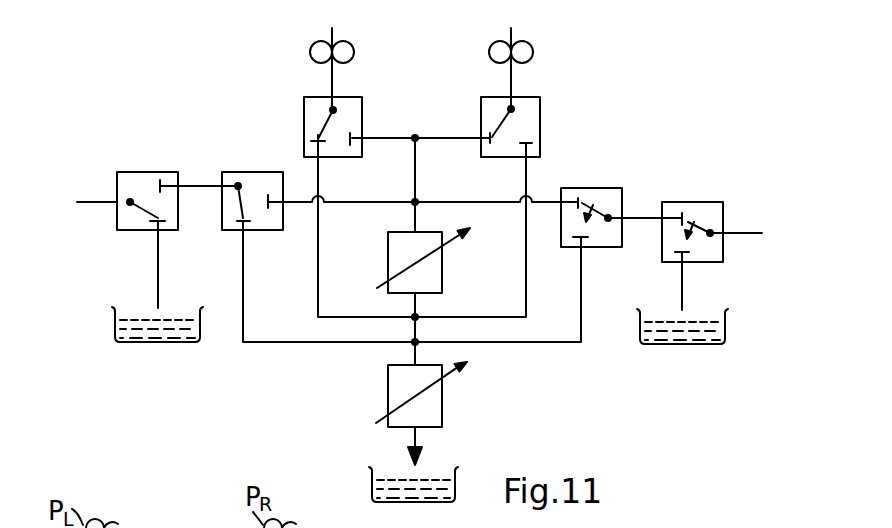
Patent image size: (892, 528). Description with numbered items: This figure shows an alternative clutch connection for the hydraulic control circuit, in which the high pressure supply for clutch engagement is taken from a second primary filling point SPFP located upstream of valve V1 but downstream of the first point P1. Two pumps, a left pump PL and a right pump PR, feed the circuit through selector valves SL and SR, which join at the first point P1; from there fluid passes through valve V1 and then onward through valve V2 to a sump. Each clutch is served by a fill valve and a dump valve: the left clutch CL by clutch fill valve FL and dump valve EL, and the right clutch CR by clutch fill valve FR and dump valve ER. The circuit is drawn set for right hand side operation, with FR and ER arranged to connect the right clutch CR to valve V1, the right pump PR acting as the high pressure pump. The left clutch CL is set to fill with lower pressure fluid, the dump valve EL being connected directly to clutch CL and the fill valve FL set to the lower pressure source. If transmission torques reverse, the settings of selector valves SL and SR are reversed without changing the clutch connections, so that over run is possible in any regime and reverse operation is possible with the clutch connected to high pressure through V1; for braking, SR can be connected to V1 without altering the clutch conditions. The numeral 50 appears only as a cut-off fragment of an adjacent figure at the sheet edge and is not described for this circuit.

The left clutch CL is at (79, 204).
The left dump valve EL is at (152, 172).
The left clutch fill valve FL is at (253, 172).
The left pump PL is at (332, 54).
The left selector valve SL is at (304, 127).
The first point P1 is at (416, 137).
The right pump PR is at (511, 54).
The right selector valve SR is at (540, 128).
The second primary filling point SPFP is at (413, 207).
The first valve V1 is at (442, 272).
The second valve V2 is at (441, 398).
The right clutch fill valve FR is at (607, 158).
The right dump valve ER is at (702, 202).
The right clutch CR is at (753, 236).
The component of adjacent figure (cut off) 50 is at (218, 517).